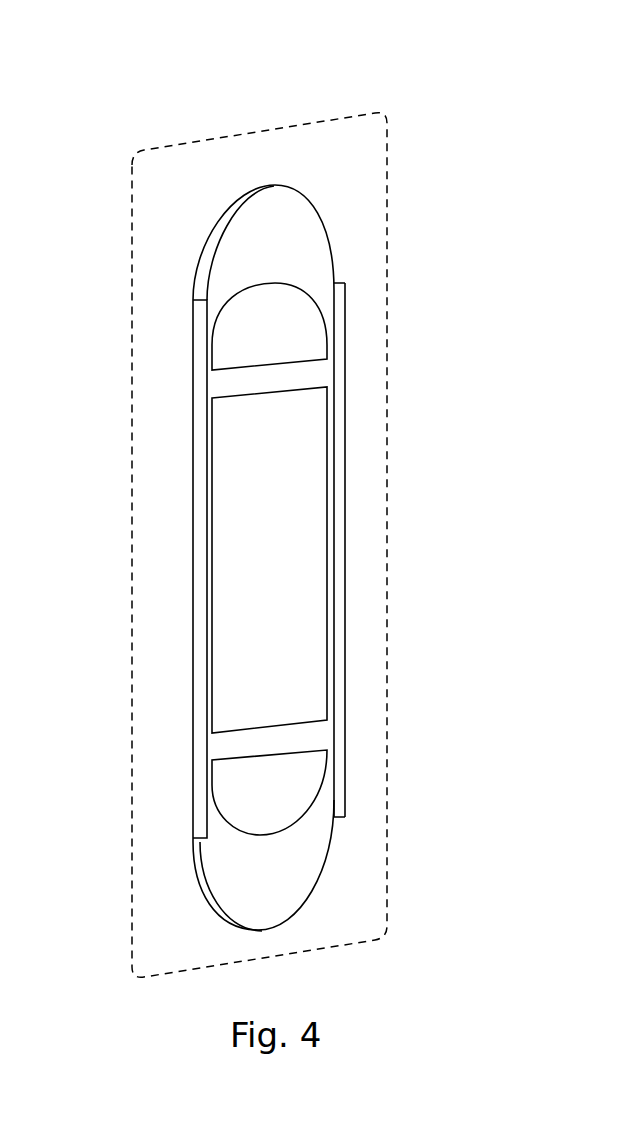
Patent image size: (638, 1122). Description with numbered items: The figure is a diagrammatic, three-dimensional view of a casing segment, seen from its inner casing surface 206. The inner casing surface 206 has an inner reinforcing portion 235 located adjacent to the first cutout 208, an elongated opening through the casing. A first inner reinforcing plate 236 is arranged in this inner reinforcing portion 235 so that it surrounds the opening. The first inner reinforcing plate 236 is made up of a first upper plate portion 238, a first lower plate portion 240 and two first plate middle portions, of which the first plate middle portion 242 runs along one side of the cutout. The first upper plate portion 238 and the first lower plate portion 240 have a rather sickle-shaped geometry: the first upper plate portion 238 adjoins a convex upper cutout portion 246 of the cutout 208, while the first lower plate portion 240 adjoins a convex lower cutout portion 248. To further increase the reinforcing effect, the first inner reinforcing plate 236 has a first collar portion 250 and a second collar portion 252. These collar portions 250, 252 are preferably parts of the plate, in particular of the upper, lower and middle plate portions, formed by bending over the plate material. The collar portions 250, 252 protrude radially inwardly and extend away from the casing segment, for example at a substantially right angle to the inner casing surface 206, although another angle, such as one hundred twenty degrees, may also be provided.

The inner casing surface 206 is at (360, 525).
The first cutout 208 is at (238, 583).
The inner reinforcing portion 235 is at (258, 474).
The first inner reinforcing plate 236 is at (258, 543).
The first upper plate portion 238 is at (297, 220).
The first lower plate portion 240 is at (252, 893).
The first plate middle portion 242 is at (430, 550).
The convex upper cutout portion 246 is at (285, 336).
The convex lower cutout portion 248 is at (288, 804).
The first collar portion 250 is at (345, 398).
The second collar portion 252 is at (197, 408).